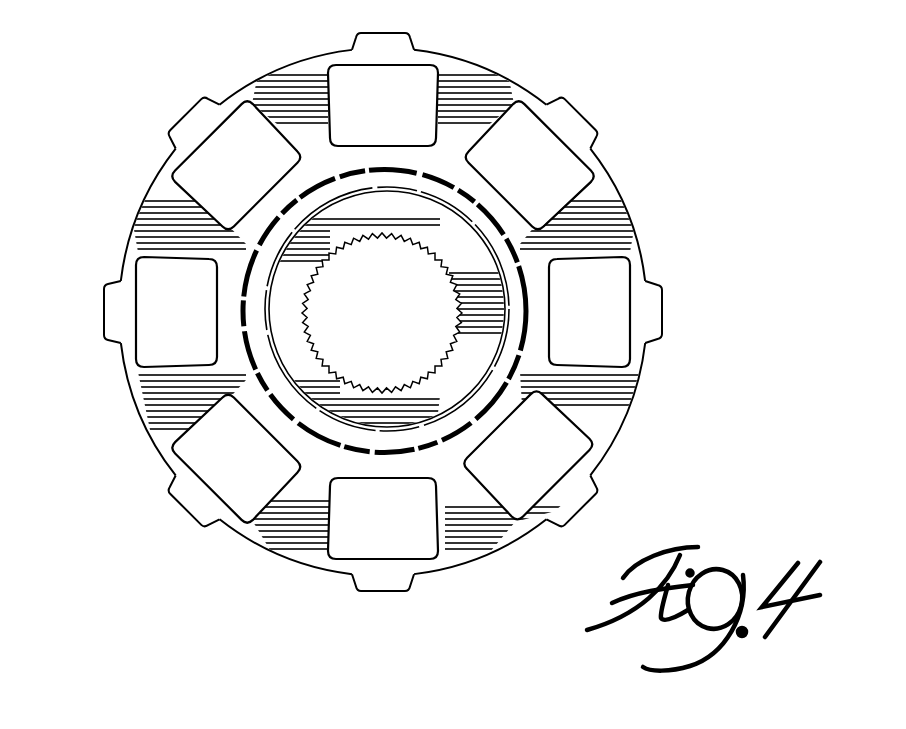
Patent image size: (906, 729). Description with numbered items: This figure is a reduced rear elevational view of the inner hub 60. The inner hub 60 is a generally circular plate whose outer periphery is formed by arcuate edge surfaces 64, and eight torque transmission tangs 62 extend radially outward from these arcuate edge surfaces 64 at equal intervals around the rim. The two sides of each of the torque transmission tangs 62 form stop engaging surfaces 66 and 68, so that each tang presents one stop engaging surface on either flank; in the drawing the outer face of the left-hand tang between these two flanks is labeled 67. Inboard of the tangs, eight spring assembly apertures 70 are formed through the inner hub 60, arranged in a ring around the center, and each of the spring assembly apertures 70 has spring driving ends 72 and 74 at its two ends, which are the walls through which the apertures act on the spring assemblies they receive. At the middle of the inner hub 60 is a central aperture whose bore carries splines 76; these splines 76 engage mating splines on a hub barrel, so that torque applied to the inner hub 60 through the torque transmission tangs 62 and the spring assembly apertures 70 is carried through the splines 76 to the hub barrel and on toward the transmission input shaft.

The inner hub 60 is at (353, 308).
The torque transmission tangs 62 is at (193, 118).
The arcuate edge surfaces 64 is at (143, 200).
The stop engaging surface 66 is at (115, 338).
The tab outer face 67 is at (107, 312).
The stop engaging surface 68 is at (113, 283).
The spring assembly apertures 70 is at (262, 158).
The spring driving end 72 is at (497, 118).
The spring driving end 74 is at (574, 186).
The splines 76 is at (430, 256).